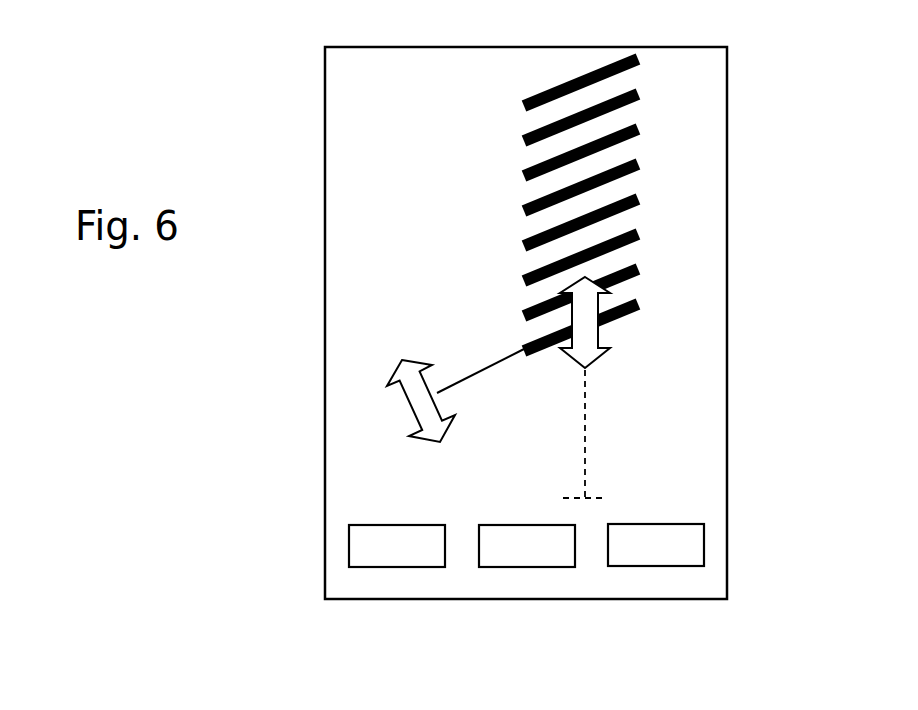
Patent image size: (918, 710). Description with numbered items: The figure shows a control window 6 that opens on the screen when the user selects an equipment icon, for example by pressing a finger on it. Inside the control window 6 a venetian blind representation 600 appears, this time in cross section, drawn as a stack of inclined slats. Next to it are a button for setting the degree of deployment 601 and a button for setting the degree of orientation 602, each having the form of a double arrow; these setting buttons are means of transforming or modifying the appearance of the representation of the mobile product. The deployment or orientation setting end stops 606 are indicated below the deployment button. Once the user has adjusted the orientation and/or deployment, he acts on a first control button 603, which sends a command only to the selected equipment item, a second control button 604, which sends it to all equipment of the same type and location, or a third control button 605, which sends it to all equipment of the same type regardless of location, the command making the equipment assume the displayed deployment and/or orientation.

The control window 6 is at (325, 478).
The venetian blind representation 600 is at (638, 135).
The button for setting the degree of deployment 601 is at (587, 340).
The button for setting the degree of orientation 602 is at (412, 428).
The first control button 603 is at (410, 551).
The second control button 604 is at (540, 551).
The third control button 605 is at (670, 550).
The deployment or orientation setting end stops 606 is at (585, 497).